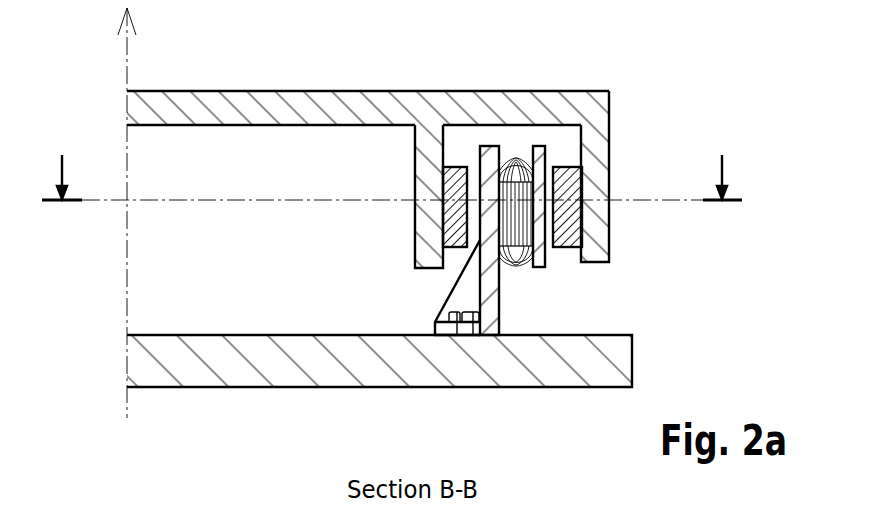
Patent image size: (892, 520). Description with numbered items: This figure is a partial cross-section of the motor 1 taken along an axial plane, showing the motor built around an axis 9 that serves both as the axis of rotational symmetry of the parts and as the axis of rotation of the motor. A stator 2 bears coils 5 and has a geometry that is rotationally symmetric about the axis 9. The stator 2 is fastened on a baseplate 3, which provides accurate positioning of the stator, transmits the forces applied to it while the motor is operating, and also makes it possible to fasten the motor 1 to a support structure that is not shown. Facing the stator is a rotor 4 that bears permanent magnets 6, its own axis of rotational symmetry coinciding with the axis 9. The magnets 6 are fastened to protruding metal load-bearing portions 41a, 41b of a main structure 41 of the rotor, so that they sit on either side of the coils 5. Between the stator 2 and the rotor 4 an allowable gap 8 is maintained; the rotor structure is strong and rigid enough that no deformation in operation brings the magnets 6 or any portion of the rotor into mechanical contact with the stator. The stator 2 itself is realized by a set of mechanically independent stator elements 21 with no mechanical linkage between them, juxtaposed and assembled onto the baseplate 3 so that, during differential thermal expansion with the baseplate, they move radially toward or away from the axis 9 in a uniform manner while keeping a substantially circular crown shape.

The motor 1 is at (399, 233).
The stator 2 is at (537, 246).
The baseplate 3 is at (357, 374).
The rotor 4 is at (418, 134).
The main structure of the rotor 41 is at (268, 98).
The protruding metal load-bearing portion 41a is at (425, 222).
The protruding metal load-bearing portion 41b is at (601, 226).
The coils 5 is at (515, 157).
The permanent magnets 6 is at (450, 188).
The gap 8 is at (470, 177).
The axis 9 is at (127, 47).
The stator elements 21 is at (493, 287).